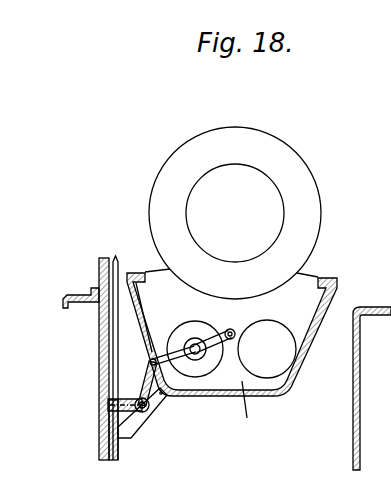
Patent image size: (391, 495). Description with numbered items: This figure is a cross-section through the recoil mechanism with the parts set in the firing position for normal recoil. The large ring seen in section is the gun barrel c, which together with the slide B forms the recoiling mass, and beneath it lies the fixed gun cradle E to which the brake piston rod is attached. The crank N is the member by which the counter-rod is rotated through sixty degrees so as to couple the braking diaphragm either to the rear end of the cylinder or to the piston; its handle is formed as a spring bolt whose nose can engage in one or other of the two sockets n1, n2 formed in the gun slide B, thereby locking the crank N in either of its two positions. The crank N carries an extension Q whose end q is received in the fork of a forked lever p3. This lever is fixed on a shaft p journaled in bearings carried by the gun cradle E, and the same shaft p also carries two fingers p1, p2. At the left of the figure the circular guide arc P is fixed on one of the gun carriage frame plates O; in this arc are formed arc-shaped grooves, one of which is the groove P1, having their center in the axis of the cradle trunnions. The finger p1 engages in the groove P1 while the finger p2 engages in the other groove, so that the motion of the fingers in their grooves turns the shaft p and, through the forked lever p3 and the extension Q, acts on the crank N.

The gun barrel c is at (307, 218).
The gun cradle E is at (279, 397).
The slide B is at (248, 408).
The socket n1 is at (236, 331).
The socket n2 is at (199, 311).
The crank N is at (221, 333).
The end of extension q is at (150, 360).
The extension of the crank Q is at (167, 352).
The shaft p is at (149, 411).
The finger p1 is at (108, 406).
The finger p2 is at (127, 430).
The forked lever p3 is at (162, 394).
The circular guide arc P is at (99, 265).
The arc-shaped groove P1 is at (112, 328).
The gun carriage frame plate O is at (99, 441).